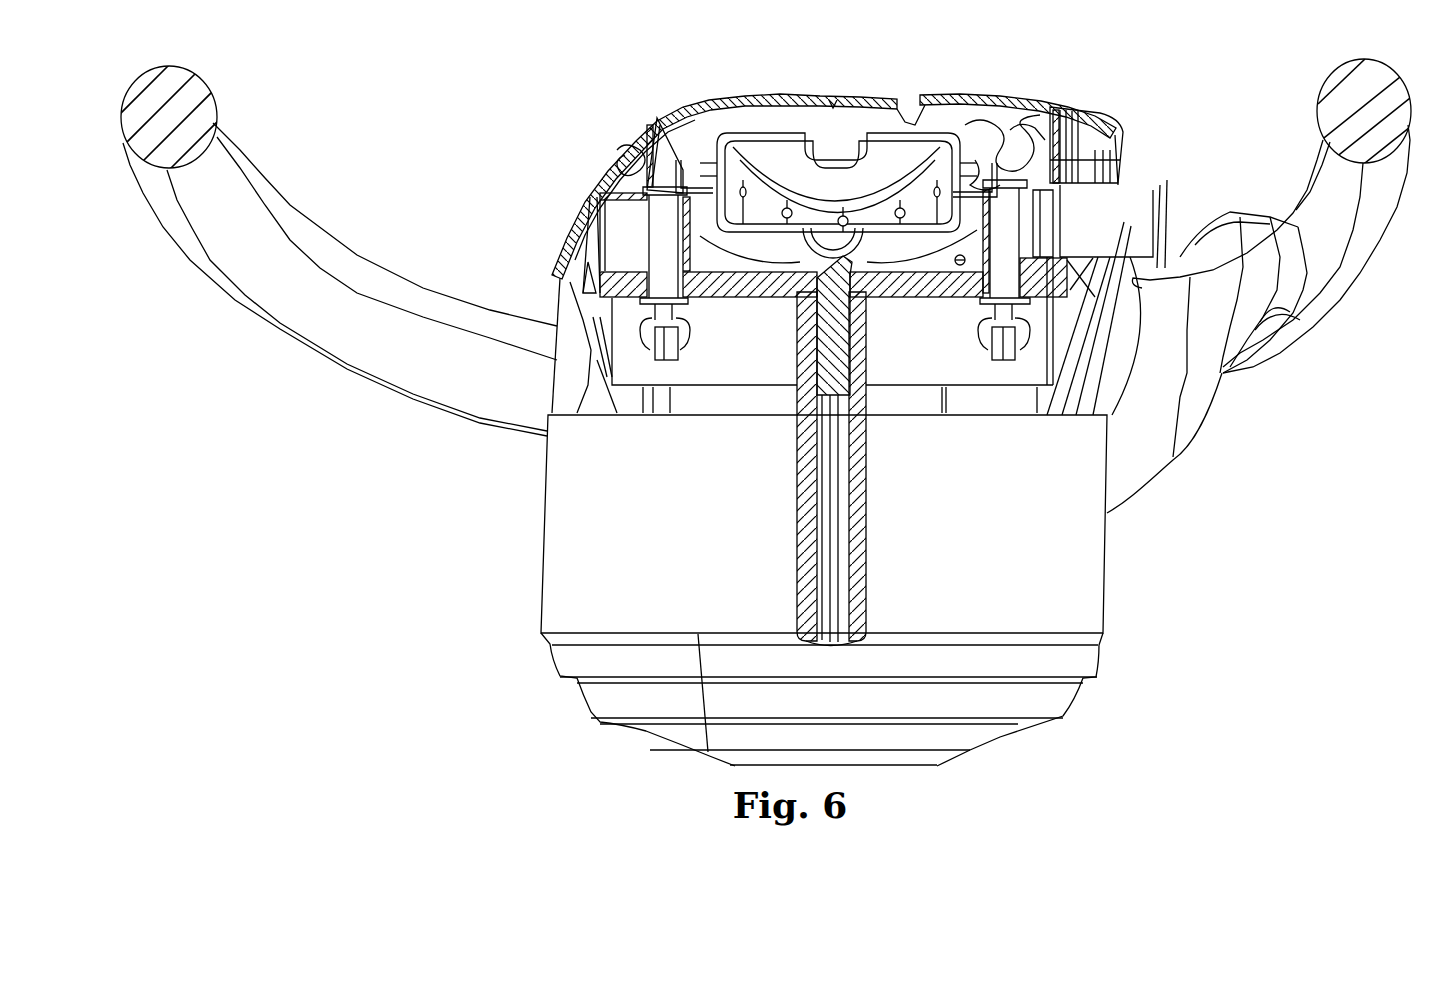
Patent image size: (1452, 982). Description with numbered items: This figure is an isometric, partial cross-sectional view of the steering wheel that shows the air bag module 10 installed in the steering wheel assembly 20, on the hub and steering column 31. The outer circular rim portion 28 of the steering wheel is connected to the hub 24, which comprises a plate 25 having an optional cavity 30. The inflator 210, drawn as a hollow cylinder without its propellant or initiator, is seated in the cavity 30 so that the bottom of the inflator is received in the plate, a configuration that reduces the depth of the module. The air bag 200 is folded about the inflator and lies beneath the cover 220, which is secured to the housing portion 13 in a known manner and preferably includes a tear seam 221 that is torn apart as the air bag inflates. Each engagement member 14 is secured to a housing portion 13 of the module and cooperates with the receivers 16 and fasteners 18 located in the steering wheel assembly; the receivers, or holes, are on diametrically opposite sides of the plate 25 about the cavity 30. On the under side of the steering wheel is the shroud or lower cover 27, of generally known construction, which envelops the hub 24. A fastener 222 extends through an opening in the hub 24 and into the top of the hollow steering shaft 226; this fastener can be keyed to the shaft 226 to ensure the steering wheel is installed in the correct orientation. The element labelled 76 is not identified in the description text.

The air bag assembly 10 is at (710, 137).
The housing portion 13 is at (650, 123).
The engagement member 14 is at (667, 220).
The receiver 16 is at (705, 297).
The fastener 18 is at (697, 323).
The steering wheel assembly 20 is at (395, 289).
The hub 24 is at (789, 302).
The plate 25 is at (878, 293).
The shroud or lower cover 27 is at (1133, 447).
The outer circular rim portion 28 is at (337, 257).
The cavity 30 is at (781, 270).
The steering column 31 is at (577, 535).
The flange 76 is at (647, 253).
The air bag 200 is at (993, 130).
The inflator 210 is at (777, 158).
The cover 220 is at (1037, 103).
The tear seam 221 is at (833, 108).
The fastener 222 is at (797, 383).
The steering shaft 226 is at (798, 491).